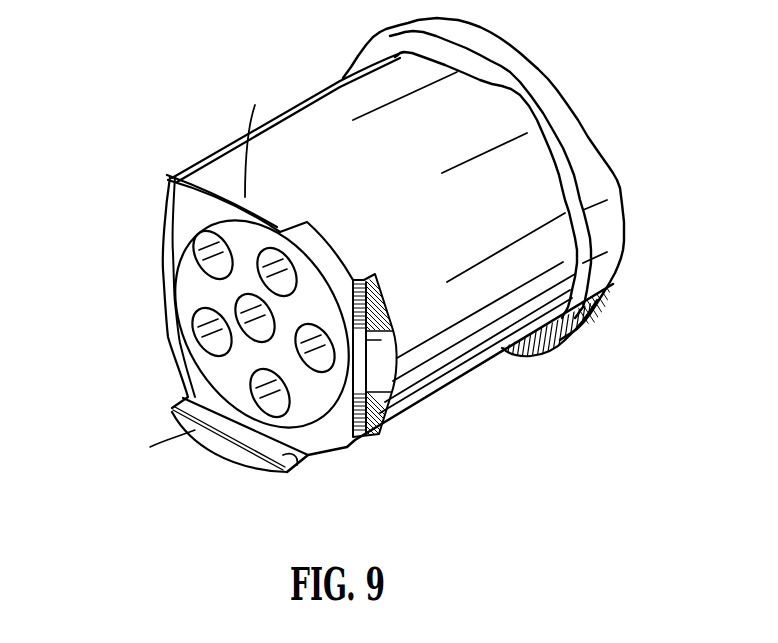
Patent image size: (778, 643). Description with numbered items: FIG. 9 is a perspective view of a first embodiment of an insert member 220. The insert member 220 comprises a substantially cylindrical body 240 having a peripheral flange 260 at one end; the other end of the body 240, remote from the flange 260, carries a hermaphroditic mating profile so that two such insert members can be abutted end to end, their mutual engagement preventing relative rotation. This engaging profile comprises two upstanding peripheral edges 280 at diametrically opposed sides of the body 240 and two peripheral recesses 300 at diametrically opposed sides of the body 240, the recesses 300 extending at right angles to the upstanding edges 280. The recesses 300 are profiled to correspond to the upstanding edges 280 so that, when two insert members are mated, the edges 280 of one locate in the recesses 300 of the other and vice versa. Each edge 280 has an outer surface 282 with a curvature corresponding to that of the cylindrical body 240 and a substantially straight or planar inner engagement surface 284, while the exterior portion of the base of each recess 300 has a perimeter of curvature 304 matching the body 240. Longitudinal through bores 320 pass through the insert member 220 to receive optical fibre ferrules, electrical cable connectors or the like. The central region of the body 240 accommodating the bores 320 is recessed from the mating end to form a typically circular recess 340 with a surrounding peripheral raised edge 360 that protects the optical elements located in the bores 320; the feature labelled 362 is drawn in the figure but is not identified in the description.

The insert member 220 is at (198, 140).
The cylindrical body 240 is at (412, 410).
The peripheral flange 260 is at (603, 274).
The upstanding peripheral edges 280 is at (168, 184).
The outer side or surface 282 is at (267, 131).
The inner engagement surface 284 is at (297, 465).
The peripheral recesses 300 is at (393, 381).
The perimeter of curvature 304 is at (380, 304).
The longitudinal through bores 320 is at (195, 240).
The recess 340 is at (207, 292).
The peripheral raised edge 360 is at (170, 353).
The groove 362 is at (368, 350).